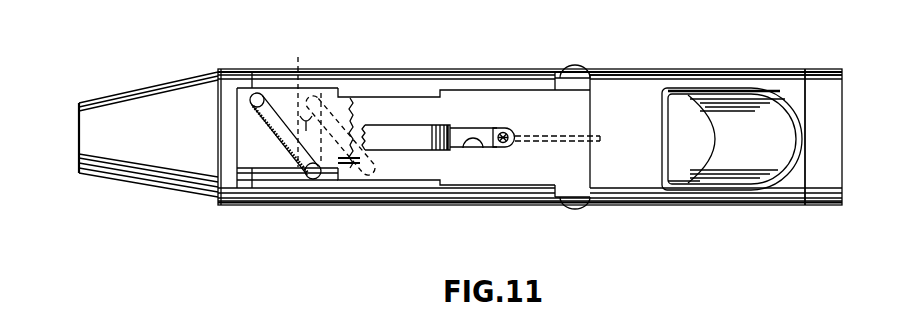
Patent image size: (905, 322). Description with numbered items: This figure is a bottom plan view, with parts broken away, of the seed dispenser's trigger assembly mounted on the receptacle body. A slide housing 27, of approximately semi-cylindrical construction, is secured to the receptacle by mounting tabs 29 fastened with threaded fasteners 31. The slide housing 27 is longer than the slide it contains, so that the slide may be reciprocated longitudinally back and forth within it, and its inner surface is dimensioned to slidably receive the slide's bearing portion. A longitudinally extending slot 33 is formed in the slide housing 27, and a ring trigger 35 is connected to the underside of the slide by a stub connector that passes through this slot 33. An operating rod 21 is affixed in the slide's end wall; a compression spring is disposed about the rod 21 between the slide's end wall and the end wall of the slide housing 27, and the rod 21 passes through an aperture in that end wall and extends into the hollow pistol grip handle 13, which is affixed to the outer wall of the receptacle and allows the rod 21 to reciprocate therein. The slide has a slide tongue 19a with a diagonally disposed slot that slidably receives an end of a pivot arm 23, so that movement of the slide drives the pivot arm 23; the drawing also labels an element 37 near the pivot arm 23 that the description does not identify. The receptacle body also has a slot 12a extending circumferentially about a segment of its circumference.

The slot 12a is at (300, 57).
The pistol grip handle 13 is at (713, 191).
The slide tongue 19a is at (267, 175).
The operating rod 21 is at (546, 143).
The pivot arm 23 is at (312, 180).
The slide housing 27 is at (474, 92).
The mounting tabs 29 is at (594, 71).
The threaded fasteners 31 is at (575, 66).
The longitudinally extending slot 33 is at (481, 146).
The ring trigger 35 is at (418, 143).
The upper pivot pin 37 is at (270, 103).